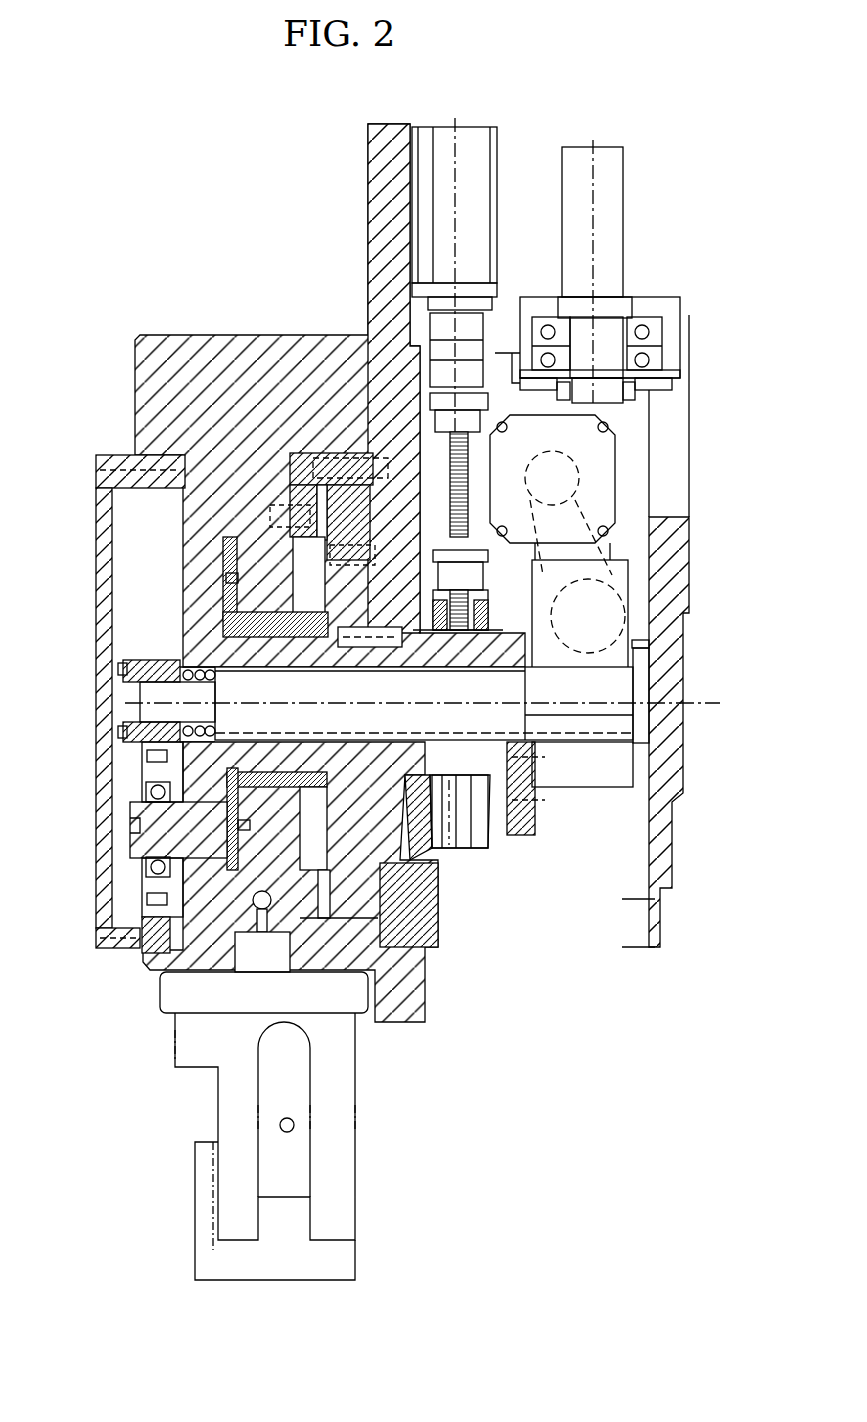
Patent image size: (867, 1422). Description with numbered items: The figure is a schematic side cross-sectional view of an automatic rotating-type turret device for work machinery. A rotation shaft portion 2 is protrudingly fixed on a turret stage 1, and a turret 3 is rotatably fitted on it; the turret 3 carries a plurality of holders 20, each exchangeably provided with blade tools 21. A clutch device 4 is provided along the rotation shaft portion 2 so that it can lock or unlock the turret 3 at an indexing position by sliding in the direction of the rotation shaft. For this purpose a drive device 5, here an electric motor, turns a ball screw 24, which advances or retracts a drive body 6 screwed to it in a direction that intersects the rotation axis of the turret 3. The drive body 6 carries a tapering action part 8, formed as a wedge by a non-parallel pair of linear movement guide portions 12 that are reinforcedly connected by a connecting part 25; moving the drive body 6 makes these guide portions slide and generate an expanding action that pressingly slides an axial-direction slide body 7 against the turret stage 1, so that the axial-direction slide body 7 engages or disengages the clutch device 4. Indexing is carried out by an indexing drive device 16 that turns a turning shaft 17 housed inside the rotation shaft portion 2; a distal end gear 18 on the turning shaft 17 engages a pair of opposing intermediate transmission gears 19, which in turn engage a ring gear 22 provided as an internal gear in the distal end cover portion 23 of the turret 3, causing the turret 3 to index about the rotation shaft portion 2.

The turret stage 1 is at (356, 162).
The rotation shaft portion 2 is at (507, 812).
The turret 3 is at (130, 332).
The clutch device 4 is at (303, 447).
The drive device 5 is at (490, 200).
The drive body 6 is at (445, 567).
The axial-direction slide body 7 is at (395, 830).
The tapering action part 8 is at (457, 842).
The linear movement guide portions 12 is at (475, 813).
The indexing drive device 16 is at (605, 470).
The turning shaft 17 is at (493, 693).
The distal end gear 18 is at (160, 663).
The intermediate transmission gears 19 is at (152, 790).
The holders 20 is at (175, 1055).
The blade tools 21 is at (195, 1252).
The ring gear 22 is at (150, 905).
The distal end cover portion 23 is at (100, 505).
The ball screw 24 is at (457, 478).
The connecting part 25 is at (498, 850).